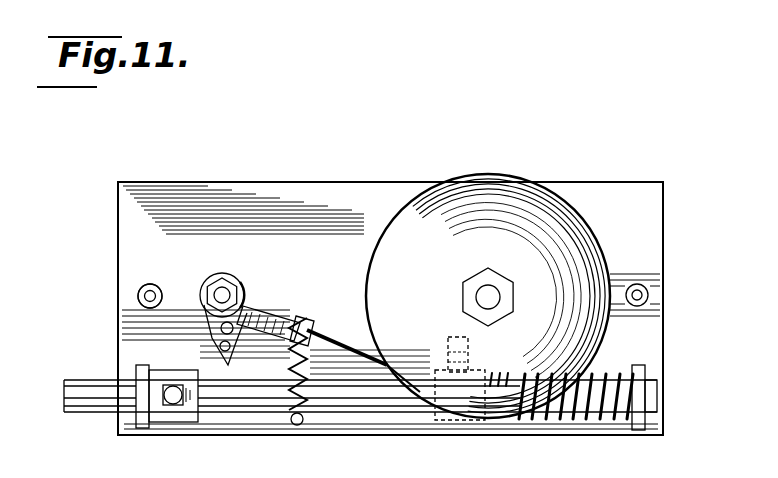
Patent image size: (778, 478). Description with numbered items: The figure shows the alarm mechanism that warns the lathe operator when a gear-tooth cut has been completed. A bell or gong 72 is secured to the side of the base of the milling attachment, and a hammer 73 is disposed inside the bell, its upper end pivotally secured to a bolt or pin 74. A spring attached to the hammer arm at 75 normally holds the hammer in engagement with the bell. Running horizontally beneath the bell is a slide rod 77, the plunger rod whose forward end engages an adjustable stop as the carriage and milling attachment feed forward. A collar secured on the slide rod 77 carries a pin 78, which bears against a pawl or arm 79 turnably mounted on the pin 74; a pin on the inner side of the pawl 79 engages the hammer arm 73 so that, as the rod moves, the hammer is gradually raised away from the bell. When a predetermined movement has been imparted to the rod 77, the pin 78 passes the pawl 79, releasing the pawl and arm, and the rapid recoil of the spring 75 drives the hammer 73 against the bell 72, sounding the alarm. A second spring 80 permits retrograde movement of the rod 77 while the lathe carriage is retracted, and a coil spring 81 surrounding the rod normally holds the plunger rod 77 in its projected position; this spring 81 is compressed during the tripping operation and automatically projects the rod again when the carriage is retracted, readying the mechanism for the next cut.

The bell or gong 72 is at (487, 205).
The hammer 73 is at (516, 393).
The bolt or pin 74 is at (228, 292).
The spring 75 is at (321, 348).
The slide rod 77 is at (270, 397).
The pin 78 is at (190, 368).
The pawl or arm 79 is at (165, 297).
The second spring 80 is at (274, 320).
The spring 81 is at (611, 418).